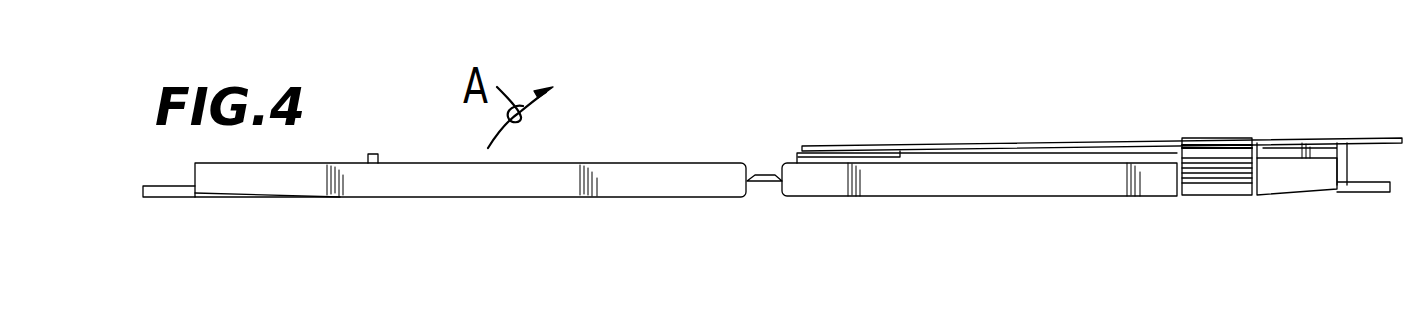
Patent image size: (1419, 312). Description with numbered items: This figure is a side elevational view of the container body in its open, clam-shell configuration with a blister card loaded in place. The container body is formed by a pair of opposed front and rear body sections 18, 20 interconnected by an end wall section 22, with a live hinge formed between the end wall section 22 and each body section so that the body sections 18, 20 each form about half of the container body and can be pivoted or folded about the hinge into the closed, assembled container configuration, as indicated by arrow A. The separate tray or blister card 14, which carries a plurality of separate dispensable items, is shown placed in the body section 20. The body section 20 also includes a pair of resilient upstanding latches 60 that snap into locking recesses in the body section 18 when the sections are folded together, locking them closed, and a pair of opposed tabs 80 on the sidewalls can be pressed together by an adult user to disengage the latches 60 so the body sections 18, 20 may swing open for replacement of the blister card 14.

The tray or blister card 14 is at (1370, 140).
The front body section 18 is at (423, 200).
The rear body section 20 is at (913, 198).
The end wall section 22 is at (770, 182).
The latches 60 is at (1218, 138).
The tabs 80 is at (1227, 193).